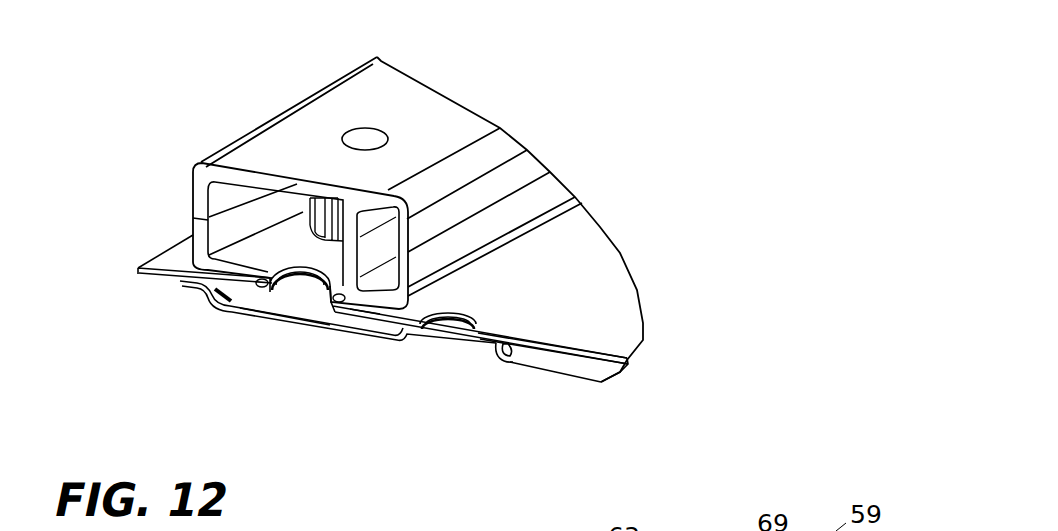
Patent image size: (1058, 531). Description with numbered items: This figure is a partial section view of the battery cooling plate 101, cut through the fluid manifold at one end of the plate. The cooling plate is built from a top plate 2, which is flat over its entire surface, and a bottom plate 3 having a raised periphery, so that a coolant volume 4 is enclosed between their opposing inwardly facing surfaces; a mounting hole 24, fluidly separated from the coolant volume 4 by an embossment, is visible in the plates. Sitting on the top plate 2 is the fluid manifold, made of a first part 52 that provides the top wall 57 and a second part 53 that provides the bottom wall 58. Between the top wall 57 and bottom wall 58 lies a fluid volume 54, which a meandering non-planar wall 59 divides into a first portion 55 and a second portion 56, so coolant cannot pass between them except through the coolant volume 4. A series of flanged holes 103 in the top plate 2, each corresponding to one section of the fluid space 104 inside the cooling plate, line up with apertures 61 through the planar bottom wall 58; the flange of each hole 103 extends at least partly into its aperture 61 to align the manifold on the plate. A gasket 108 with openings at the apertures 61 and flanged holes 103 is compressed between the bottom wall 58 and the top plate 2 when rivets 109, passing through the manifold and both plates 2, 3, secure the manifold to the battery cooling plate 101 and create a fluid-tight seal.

The plate 2 is at (598, 275).
The plate 3 is at (567, 380).
The coolant volume 4 is at (550, 357).
The mounting hole 24 is at (452, 323).
The first part 52 is at (187, 182).
The second part 53 is at (192, 227).
The fluid volume 54 is at (342, 354).
The first portion 55 is at (207, 295).
The second portion 56 is at (328, 302).
The top wall 57 is at (422, 105).
The bottom wall 58 is at (362, 310).
The non-planar wall 59 is at (409, 206).
The aperture 61 is at (307, 267).
The battery cooling plate 101 is at (677, 295).
The flanged hole 103 is at (292, 283).
The fluid space 104 is at (262, 298).
The gasket 108 is at (207, 290).
The rivet 109 is at (360, 133).